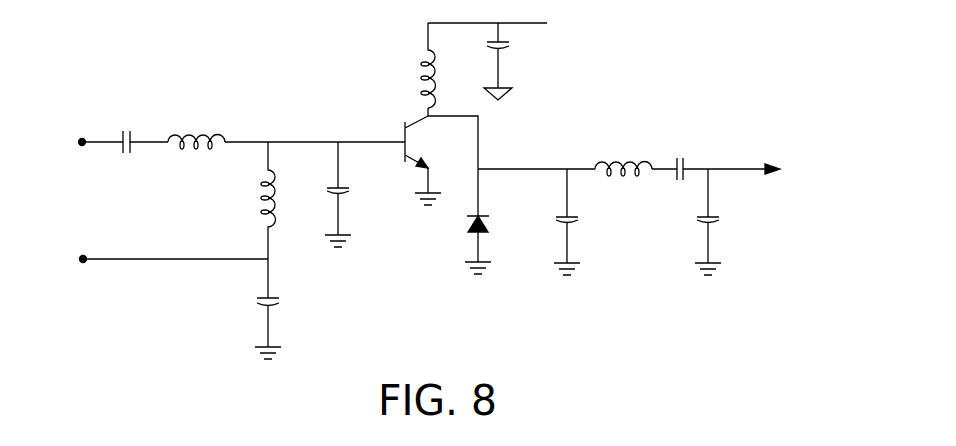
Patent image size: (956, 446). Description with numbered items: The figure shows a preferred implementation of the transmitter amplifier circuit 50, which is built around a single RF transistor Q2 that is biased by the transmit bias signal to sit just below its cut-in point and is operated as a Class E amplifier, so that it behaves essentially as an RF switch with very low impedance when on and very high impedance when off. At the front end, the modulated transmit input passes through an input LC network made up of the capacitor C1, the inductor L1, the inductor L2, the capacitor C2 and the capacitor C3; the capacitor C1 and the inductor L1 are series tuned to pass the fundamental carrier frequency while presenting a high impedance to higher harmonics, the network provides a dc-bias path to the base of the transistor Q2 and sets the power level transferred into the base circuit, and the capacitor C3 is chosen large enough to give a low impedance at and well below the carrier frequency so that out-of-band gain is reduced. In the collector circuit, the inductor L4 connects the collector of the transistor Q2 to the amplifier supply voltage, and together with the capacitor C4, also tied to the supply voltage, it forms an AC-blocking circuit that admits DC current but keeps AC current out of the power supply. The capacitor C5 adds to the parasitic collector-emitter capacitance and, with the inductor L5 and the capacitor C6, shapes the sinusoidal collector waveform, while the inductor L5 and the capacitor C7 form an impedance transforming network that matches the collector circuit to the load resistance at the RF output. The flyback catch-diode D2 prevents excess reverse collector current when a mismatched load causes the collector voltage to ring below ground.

The transmitter amplifier circuit 50 is at (130, 67).
The capacitor C1 is at (127, 125).
The inductor L1 is at (196, 123).
The inductor L2 is at (251, 220).
The capacitor C2 is at (349, 194).
The capacitor C3 is at (281, 328).
The RF transistor Q2 is at (441, 162).
The inductor L4 is at (411, 65).
The capacitor C4 is at (509, 61).
The flyback catch-diode D2 is at (490, 245).
The capacitor C5 is at (578, 222).
The inductor L5 is at (623, 151).
The capacitor C6 is at (679, 153).
The capacitor C7 is at (719, 222).